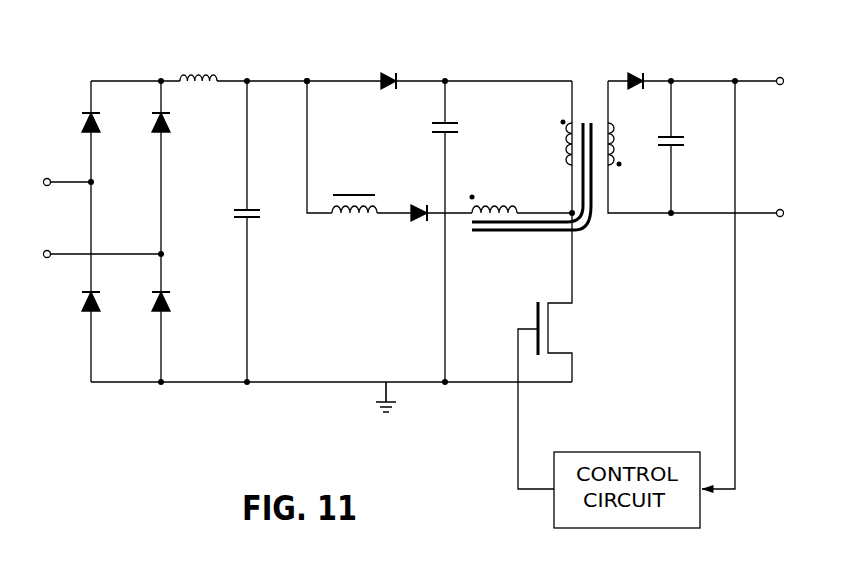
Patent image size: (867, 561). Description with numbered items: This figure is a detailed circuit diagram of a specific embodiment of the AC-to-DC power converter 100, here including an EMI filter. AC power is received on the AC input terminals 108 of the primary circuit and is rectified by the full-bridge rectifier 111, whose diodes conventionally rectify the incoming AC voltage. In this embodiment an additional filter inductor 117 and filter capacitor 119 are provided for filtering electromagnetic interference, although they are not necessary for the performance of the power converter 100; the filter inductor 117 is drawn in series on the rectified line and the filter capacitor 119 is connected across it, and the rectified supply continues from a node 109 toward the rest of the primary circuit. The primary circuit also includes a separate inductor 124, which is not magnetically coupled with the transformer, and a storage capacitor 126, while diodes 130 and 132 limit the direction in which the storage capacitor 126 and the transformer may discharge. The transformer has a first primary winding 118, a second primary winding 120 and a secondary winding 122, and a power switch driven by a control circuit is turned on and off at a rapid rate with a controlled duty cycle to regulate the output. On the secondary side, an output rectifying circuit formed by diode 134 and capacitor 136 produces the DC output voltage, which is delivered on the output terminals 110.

The AC-to-DC converter 100 is at (362, 55).
The AC input terminals 108 is at (45, 178).
The node 109 is at (306, 79).
The output terminals 110 is at (782, 78).
The full-bridge rectifier 111 is at (86, 95).
The filter inductor 117 is at (198, 86).
The first primary winding 118 is at (574, 120).
The filter capacitor 119 is at (254, 207).
The second primary winding 120 is at (493, 203).
The secondary winding 122 is at (613, 148).
The inductor 124 is at (358, 219).
The storage capacitor 126 is at (436, 135).
The diode 130 is at (384, 88).
The diode 132 is at (413, 220).
The diode 134 is at (633, 72).
The capacitor 136 is at (683, 137).